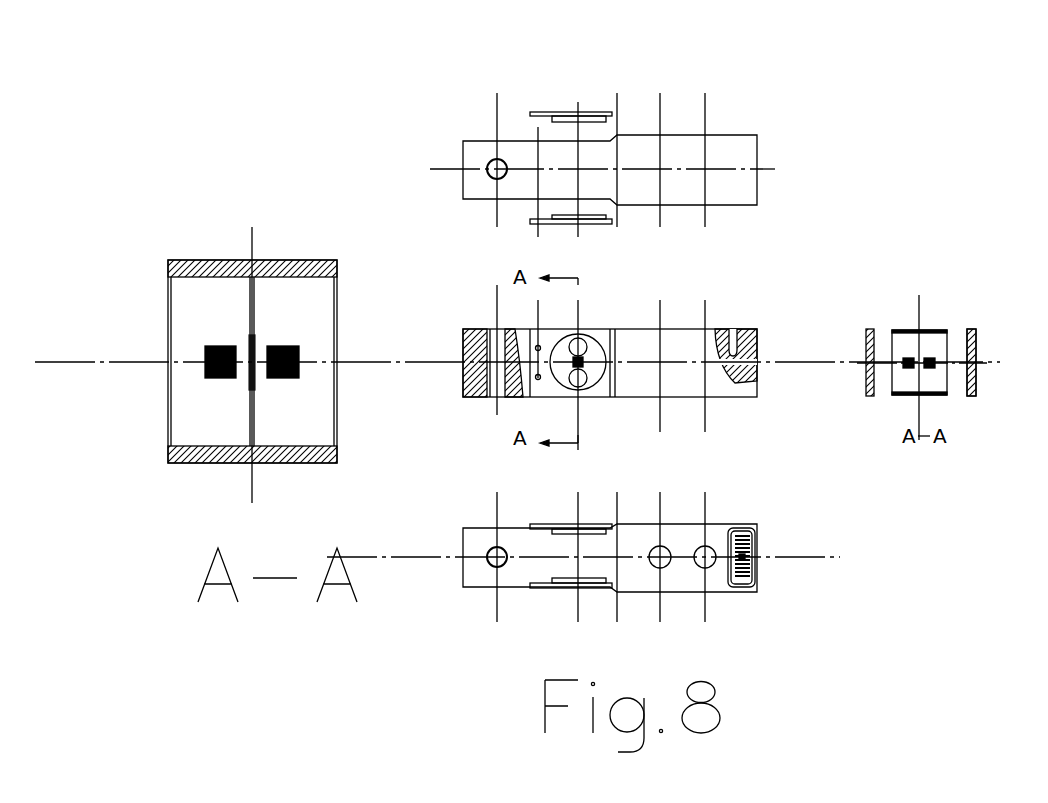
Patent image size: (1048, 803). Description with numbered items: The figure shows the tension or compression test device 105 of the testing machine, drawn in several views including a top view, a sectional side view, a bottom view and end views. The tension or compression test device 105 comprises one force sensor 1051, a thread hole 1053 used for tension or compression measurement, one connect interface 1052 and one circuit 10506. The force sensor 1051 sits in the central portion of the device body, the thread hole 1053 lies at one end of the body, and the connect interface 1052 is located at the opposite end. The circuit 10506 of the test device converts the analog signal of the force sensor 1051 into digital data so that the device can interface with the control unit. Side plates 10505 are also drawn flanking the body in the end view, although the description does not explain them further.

The tension or compression test device 105 is at (685, 148).
The force sensor 1051 is at (590, 352).
The connect interface 1052 is at (748, 572).
The thread hole 1053 is at (493, 382).
The side plates 10505 is at (870, 336).
The circuit 10506 is at (1023, 448).